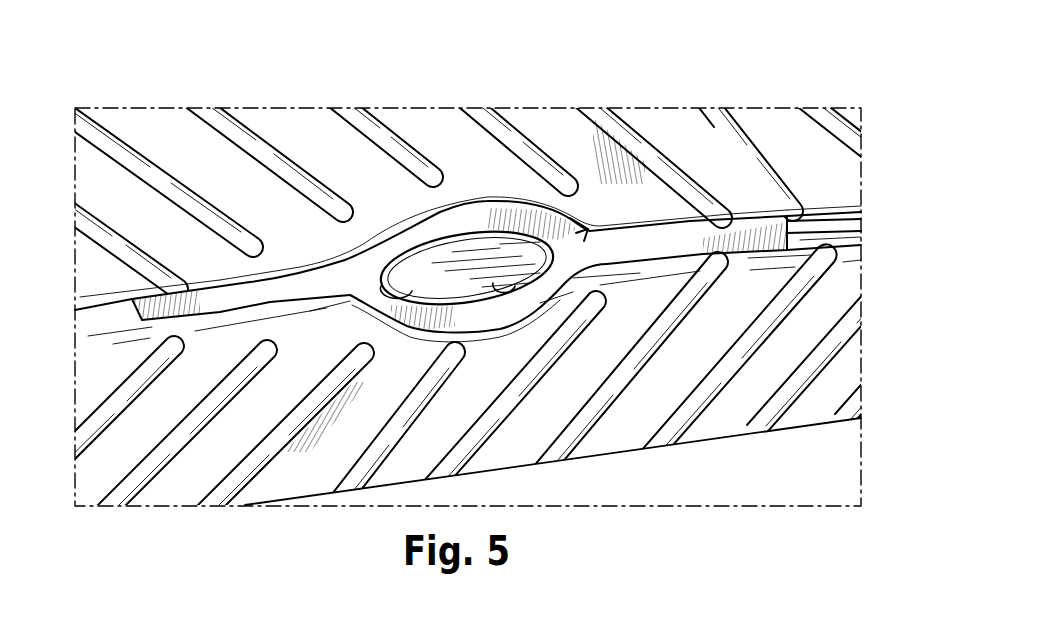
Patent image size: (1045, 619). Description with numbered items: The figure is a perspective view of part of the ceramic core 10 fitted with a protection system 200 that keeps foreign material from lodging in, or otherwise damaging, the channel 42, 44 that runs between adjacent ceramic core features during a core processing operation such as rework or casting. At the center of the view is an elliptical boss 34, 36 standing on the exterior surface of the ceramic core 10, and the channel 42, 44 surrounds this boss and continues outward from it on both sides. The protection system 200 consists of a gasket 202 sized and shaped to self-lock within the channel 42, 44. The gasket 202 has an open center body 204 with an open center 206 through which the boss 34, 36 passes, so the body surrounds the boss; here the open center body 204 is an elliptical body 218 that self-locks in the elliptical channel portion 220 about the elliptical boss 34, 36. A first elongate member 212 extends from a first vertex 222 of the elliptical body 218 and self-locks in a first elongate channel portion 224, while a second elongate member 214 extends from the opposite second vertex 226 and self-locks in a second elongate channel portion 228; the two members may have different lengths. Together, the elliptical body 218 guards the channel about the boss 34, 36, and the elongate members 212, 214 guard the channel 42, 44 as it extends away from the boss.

The ceramic core 10 is at (104, 61).
The boss 34 is at (481, 205).
The boss 36 is at (440, 275).
The channel 42 is at (476, 282).
The channel 44 is at (476, 282).
The protection system 200 is at (503, 233).
The gasket 202 is at (423, 220).
The open center body 204 is at (530, 238).
The open center 206 is at (384, 282).
The first elongate member 212 is at (163, 307).
The second elongate member 214 is at (668, 245).
The elliptical body 218 is at (530, 238).
The elliptical channel portion 220 is at (527, 207).
The first vertex 222 is at (393, 288).
The first elongate channel portion 224 is at (113, 325).
The second vertex 226 is at (553, 270).
The second elongate channel portion 228 is at (853, 222).